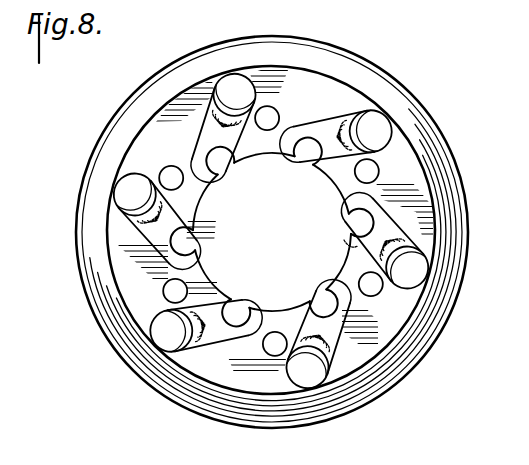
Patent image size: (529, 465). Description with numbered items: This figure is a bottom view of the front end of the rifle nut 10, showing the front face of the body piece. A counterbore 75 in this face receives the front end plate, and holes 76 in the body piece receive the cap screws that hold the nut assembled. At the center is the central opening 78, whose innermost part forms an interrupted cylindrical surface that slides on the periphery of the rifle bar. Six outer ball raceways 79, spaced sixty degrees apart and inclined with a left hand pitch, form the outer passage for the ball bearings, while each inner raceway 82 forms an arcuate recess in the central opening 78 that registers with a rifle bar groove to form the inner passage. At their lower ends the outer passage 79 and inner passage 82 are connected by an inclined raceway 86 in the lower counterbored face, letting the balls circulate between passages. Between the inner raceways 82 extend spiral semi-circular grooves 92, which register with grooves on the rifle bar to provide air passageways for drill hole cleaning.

The clutch assembly 10 is at (392, 14).
The counterbore 75 is at (392, 316).
The holes 76 is at (378, 165).
The central opening 78 is at (217, 273).
The outer ball raceways 79 is at (318, 375).
The inner raceway 82 is at (216, 159).
The inclined raceway 86 is at (328, 121).
The semi-circular grooves 92 is at (353, 242).